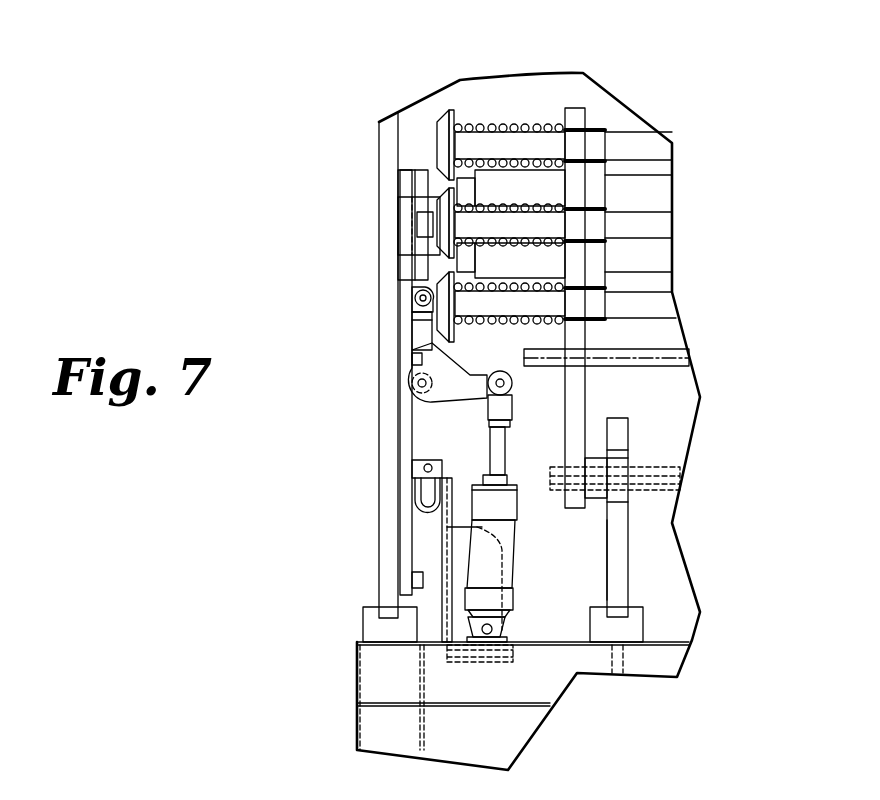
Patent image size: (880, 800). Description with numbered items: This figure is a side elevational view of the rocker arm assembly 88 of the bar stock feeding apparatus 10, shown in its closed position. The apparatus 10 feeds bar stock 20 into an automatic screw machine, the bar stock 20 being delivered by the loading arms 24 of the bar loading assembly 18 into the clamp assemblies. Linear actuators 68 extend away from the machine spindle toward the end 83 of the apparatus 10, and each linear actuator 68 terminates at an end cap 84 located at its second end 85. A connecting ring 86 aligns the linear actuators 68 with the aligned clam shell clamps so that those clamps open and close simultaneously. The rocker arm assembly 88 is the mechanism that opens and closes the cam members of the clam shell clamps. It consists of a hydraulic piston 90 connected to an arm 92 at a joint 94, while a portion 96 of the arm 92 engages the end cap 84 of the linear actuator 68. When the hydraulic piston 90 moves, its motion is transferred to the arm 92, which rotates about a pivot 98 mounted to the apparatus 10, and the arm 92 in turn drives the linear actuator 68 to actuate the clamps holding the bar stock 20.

The apparatus for feeding bar stock 10 is at (350, 516).
The bar loading assembly 18 is at (634, 555).
The bar stock 20 is at (665, 350).
The loading arms 24 is at (573, 390).
The linear actuator 68 is at (657, 143).
The end 83 is at (388, 170).
The end cap 84 is at (445, 133).
The second end 85 is at (462, 126).
The connecting ring 86 is at (578, 118).
The rocker arm assembly 88 is at (518, 560).
The hydraulic piston 90 is at (512, 452).
The arm 92 is at (472, 382).
The joint 94 is at (487, 387).
The portion of arm 96 is at (412, 302).
The pivot 98 is at (414, 383).